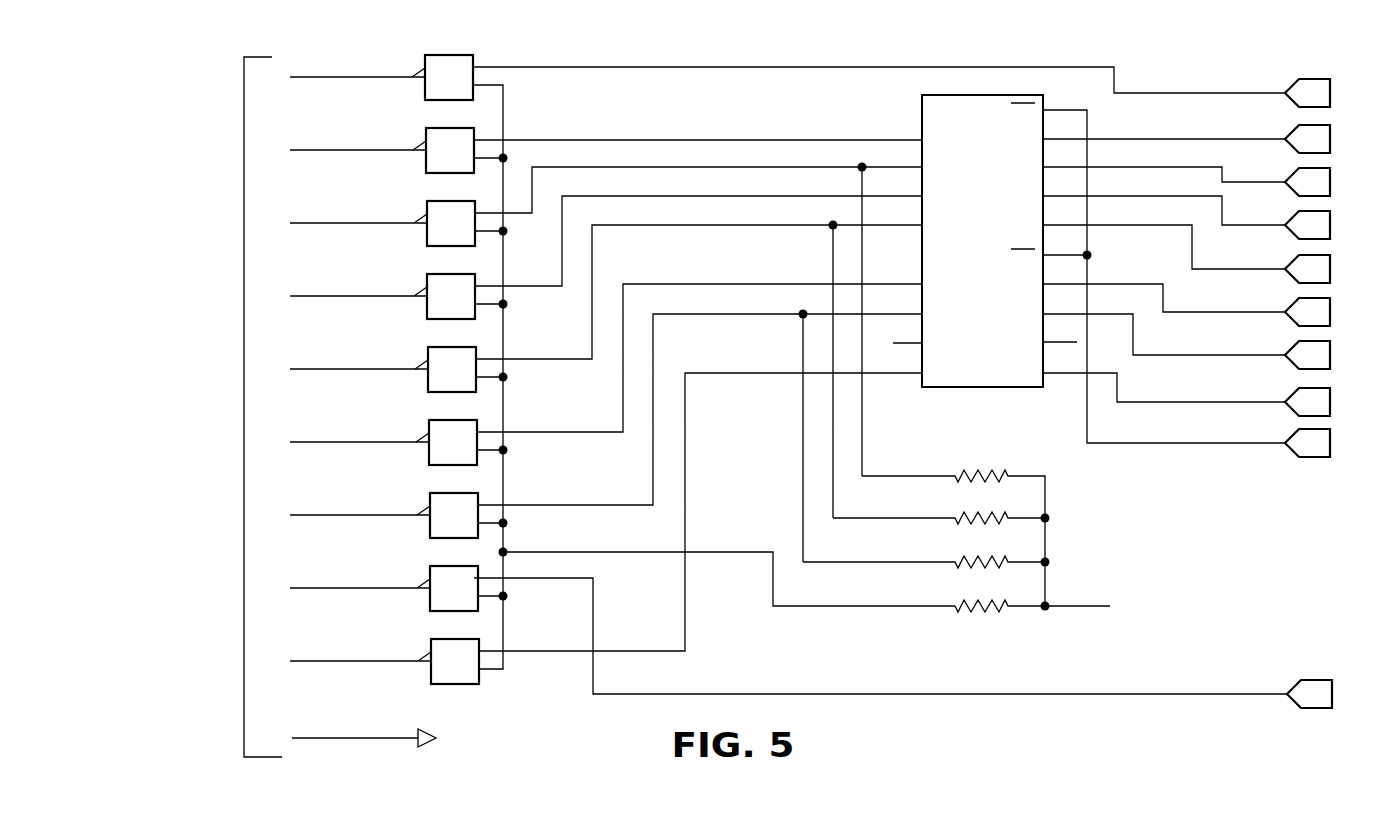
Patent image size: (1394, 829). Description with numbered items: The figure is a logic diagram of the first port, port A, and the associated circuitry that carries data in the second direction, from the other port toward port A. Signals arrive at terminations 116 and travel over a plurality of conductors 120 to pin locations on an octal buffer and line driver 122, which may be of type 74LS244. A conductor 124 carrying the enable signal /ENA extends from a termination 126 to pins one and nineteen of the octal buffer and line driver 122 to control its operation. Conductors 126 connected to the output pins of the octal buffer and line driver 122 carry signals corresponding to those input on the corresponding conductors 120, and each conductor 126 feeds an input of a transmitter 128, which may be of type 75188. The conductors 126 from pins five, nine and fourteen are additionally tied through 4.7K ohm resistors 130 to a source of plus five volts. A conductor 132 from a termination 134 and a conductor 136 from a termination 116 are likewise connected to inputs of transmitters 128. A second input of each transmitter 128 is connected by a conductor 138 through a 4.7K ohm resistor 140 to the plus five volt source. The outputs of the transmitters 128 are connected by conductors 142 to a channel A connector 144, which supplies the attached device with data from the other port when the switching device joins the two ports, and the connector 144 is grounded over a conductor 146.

The termination 116 is at (1331, 137).
The conductors 120 is at (1106, 139).
The octal buffer and line driver 122 is at (986, 389).
The conductor 124 is at (1160, 443).
The conductors 126 is at (698, 140).
The transmitter 128 is at (423, 83).
The resistor 130 is at (960, 474).
The conductor 132 is at (698, 67).
The termination 134 is at (1331, 91).
The conductor 136 is at (702, 694).
The conductor 138 is at (702, 552).
The resistor 140 is at (960, 604).
The conductors 142 is at (337, 81).
The channel A connector 144 is at (244, 145).
The conductor 146 is at (337, 741).